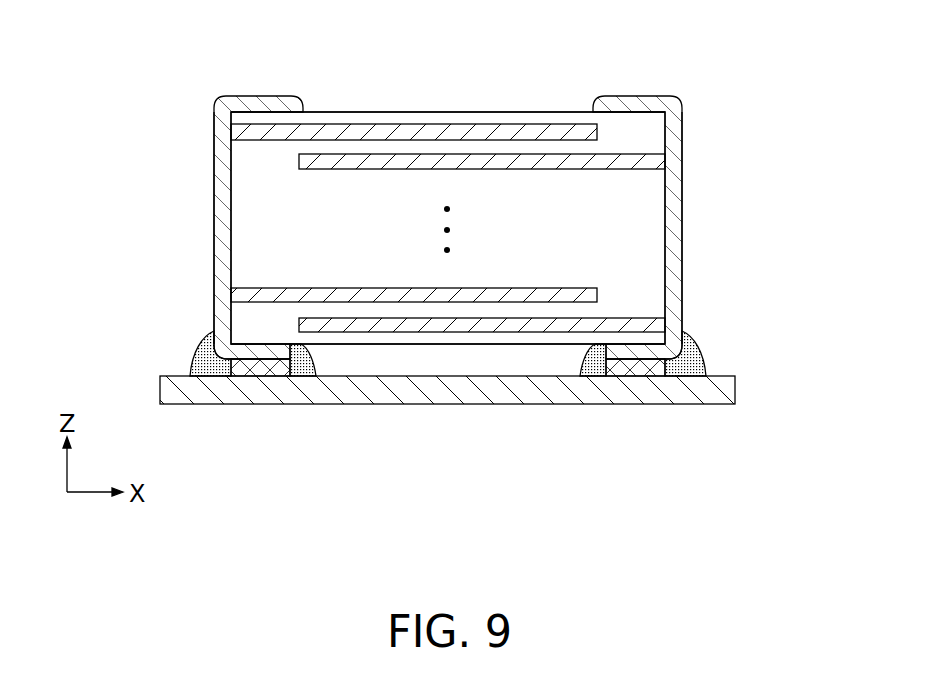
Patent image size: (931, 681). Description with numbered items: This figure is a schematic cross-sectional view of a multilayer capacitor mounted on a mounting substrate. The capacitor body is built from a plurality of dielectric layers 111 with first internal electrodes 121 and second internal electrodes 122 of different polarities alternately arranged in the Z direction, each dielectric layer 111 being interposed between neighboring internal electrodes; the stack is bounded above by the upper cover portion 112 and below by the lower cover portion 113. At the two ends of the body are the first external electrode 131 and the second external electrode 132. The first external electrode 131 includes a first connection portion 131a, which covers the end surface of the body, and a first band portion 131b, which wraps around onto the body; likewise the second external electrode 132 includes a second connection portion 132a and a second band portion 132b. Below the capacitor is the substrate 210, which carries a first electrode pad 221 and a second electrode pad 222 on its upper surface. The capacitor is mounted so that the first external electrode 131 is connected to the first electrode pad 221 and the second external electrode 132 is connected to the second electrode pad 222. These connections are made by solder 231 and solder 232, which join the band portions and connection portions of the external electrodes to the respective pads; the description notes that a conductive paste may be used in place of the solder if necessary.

The dielectric layer 111 is at (522, 313).
The upper cover portion 112 is at (454, 118).
The lower cover portion 113 is at (455, 338).
The first internal electrode 121 is at (277, 133).
The second internal electrode 122 is at (568, 323).
The first external electrode 131 is at (174, 227).
The first connection portion 131a is at (219, 248).
The first band portion 131b is at (263, 352).
The second external electrode 132 is at (721, 227).
The second connection portion 132a is at (686, 249).
The second band portion 132b is at (632, 352).
The substrate 210 is at (358, 387).
The first electrode pad 221 is at (266, 372).
The second electrode pad 222 is at (643, 372).
The solder 231 is at (200, 370).
The solder 232 is at (698, 370).